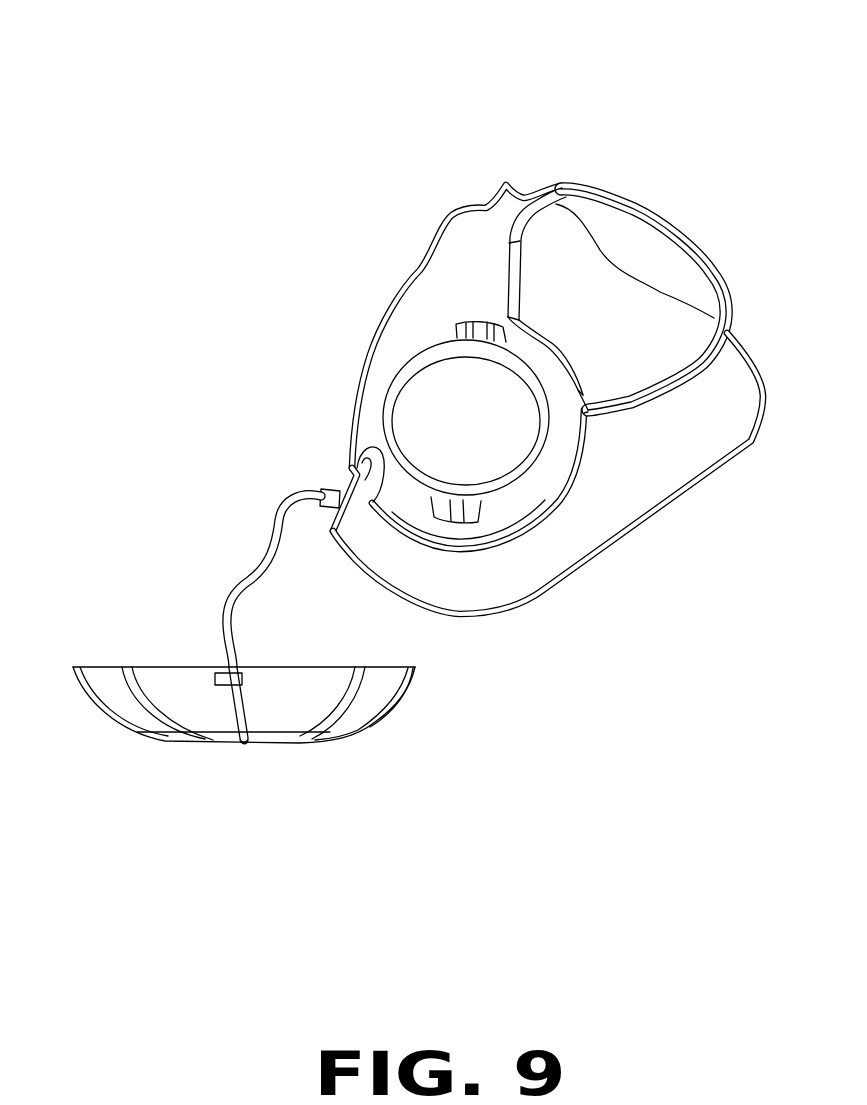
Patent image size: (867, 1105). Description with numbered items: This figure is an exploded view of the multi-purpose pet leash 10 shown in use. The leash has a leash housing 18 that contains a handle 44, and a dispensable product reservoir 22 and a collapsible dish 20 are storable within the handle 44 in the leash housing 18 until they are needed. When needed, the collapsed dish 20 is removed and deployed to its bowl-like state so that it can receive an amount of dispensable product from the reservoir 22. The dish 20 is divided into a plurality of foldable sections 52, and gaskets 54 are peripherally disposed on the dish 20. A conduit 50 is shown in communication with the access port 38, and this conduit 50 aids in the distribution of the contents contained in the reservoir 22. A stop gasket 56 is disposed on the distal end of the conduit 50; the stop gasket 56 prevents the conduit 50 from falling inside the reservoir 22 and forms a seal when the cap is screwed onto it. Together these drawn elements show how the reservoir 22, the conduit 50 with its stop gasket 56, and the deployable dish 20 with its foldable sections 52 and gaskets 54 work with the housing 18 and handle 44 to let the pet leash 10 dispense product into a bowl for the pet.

The multi-purpose pet leash 10 is at (654, 112).
The leash housing 18 is at (384, 320).
The handle 44 is at (637, 246).
The dispensable product reservoir 22 is at (680, 450).
The access port 38 is at (327, 488).
The conduit 50 is at (245, 577).
The collapsible dish 20 is at (167, 666).
The stop gasket 56 is at (236, 662).
The gaskets 54 is at (407, 677).
The foldable sections 52 is at (363, 707).